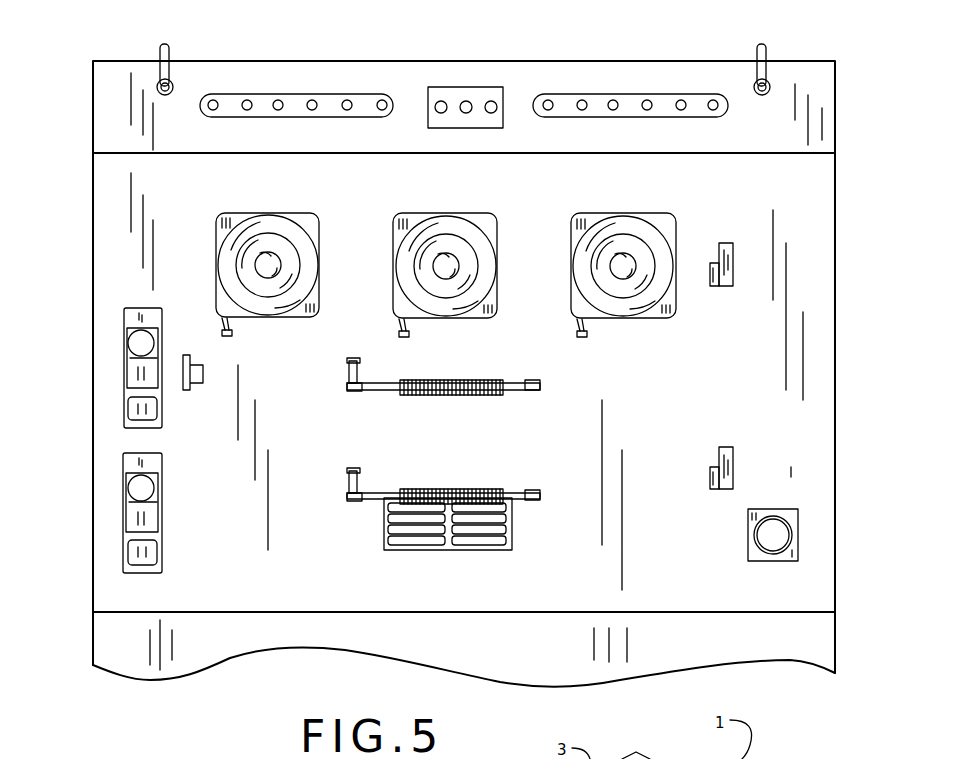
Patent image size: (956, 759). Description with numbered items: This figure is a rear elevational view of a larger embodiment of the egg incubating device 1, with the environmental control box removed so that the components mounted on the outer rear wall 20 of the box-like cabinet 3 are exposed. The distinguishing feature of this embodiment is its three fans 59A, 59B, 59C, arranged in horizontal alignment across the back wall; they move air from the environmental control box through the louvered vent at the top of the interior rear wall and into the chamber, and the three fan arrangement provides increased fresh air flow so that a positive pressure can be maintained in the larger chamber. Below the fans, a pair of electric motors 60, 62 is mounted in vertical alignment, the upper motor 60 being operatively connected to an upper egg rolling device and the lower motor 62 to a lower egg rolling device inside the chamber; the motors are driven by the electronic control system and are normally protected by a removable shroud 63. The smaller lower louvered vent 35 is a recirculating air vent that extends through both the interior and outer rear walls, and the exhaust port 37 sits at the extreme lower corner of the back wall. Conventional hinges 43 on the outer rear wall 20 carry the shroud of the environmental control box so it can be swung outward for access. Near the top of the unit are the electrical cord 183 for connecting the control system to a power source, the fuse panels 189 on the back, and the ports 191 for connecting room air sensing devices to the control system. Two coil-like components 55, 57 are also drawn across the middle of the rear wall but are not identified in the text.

The egg incubating device 1 is at (66, 160).
The cabinet 3 is at (835, 362).
The outer rear wall 20 is at (793, 472).
The lower louvered vent 35 is at (404, 532).
The exhaust port 37 is at (772, 534).
The hinges 43 is at (728, 462).
The lower coil element 55 is at (515, 491).
The upper coil element 57 is at (492, 393).
The fan 59A is at (235, 256).
The fan 59B is at (437, 230).
The fan 59C is at (616, 230).
The electric motor 60 is at (128, 374).
The electric motor 62 is at (127, 505).
The removable shroud 63 is at (728, 260).
The electrical cord 183 is at (169, 50).
The fuse panels 189 is at (265, 94).
The ports 191 is at (448, 87).